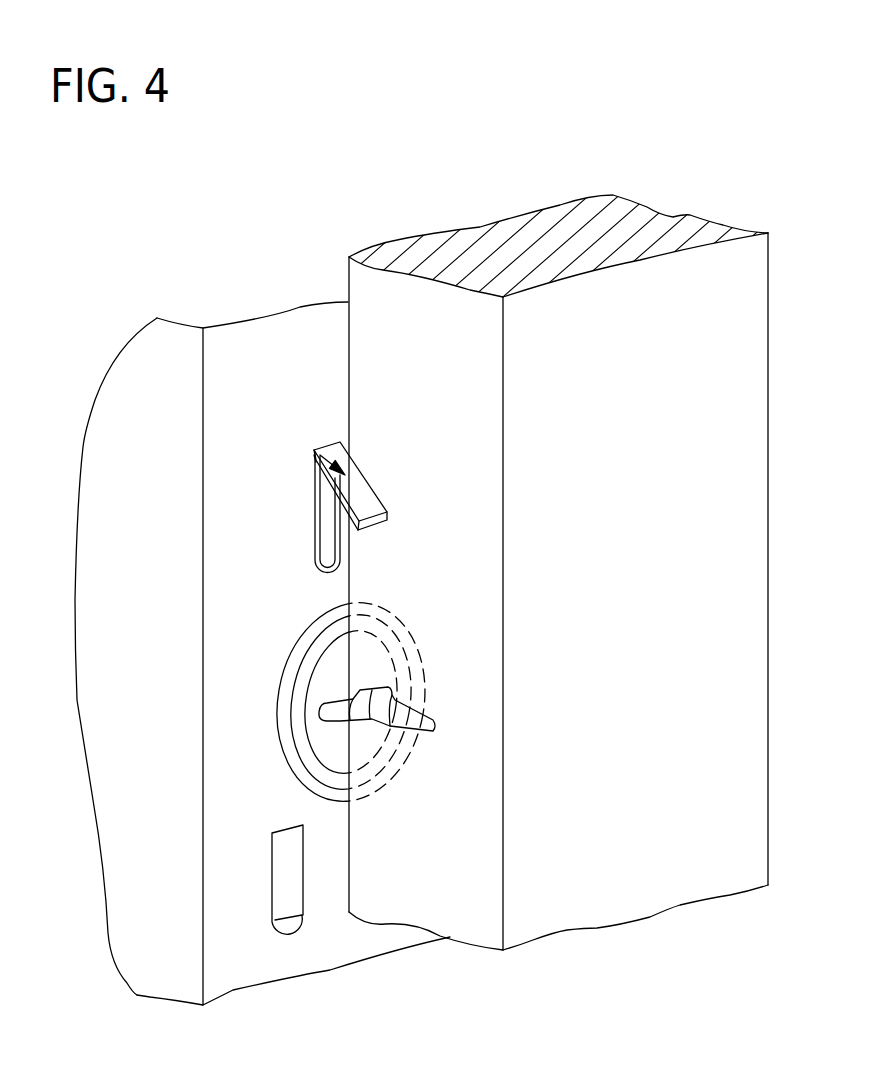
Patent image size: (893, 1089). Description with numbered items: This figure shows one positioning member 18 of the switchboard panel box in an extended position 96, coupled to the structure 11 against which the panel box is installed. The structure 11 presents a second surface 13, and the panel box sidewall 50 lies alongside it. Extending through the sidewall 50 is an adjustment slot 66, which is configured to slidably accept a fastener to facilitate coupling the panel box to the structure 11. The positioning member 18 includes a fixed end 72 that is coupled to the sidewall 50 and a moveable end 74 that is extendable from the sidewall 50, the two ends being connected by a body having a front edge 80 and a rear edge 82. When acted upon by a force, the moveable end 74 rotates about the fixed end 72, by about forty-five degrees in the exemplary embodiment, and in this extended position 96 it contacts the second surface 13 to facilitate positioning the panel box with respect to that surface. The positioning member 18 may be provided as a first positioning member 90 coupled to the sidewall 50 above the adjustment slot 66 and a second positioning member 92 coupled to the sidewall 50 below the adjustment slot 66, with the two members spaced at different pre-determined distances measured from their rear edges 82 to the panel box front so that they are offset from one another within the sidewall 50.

The structure 11 is at (668, 931).
The second surface 13 is at (420, 295).
The positioning member 18 is at (313, 451).
The sidewall 50 is at (243, 970).
The adjustment slot 66 is at (333, 723).
The fixed end 72 is at (336, 445).
The moveable end 74 is at (373, 523).
The front edge 80 is at (327, 482).
The rear edge 82 is at (353, 462).
The first positioning member 90 is at (353, 498).
The second positioning member 92 is at (293, 890).
The extended position 96 is at (376, 479).